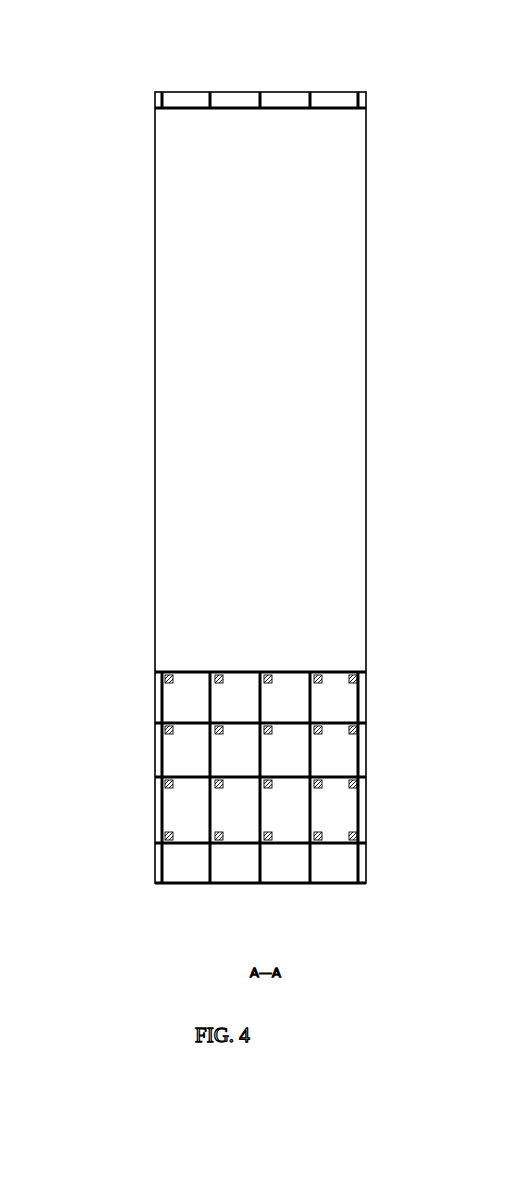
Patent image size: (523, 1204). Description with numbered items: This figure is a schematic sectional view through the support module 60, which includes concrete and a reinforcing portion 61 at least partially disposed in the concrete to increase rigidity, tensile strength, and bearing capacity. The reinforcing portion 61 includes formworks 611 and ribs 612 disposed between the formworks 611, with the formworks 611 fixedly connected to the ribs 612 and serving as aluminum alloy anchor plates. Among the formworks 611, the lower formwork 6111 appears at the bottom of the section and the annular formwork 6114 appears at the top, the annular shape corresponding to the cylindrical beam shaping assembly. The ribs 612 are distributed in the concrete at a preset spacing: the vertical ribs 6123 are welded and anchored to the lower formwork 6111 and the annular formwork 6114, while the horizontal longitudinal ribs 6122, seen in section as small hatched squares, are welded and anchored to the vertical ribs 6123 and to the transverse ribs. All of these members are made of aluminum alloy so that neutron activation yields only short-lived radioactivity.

The support module 60 is at (92, 48).
The reinforcing portion 61 is at (121, 673).
The formworks 611 is at (214, 889).
The lower formwork 6111 is at (333, 886).
The annular formwork 6114 is at (280, 110).
The ribs 612 is at (362, 712).
The horizontal longitudinal ribs 6122 is at (190, 776).
The vertical ribs 6123 is at (210, 714).